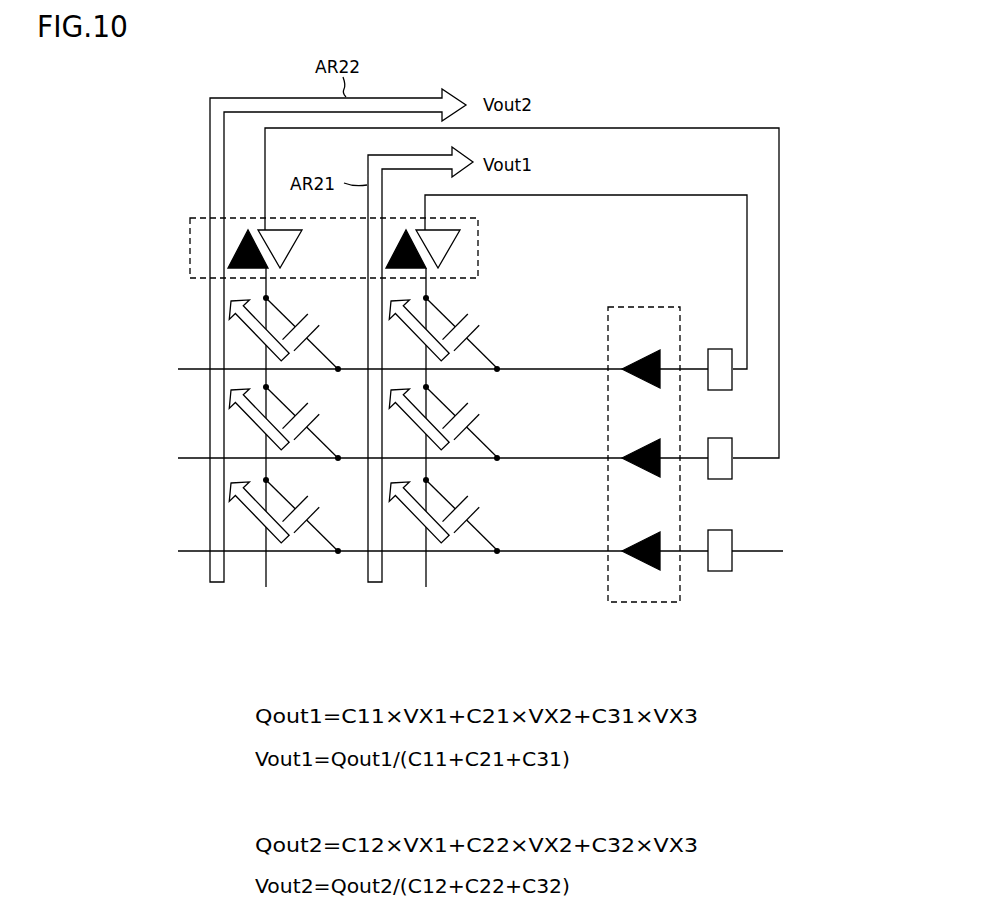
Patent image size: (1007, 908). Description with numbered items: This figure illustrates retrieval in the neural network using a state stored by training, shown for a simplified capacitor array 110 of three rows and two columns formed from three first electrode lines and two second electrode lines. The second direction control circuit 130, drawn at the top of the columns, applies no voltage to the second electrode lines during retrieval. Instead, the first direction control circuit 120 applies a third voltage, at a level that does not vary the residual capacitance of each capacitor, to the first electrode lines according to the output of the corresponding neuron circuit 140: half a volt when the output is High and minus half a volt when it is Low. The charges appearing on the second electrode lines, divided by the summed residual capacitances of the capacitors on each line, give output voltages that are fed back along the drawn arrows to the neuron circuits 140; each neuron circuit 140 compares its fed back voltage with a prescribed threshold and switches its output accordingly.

The capacitor array 110 is at (143, 345).
The direction control circuit 120 is at (680, 582).
The direction control circuit 130 is at (206, 282).
The neuron circuit 140 is at (733, 470).